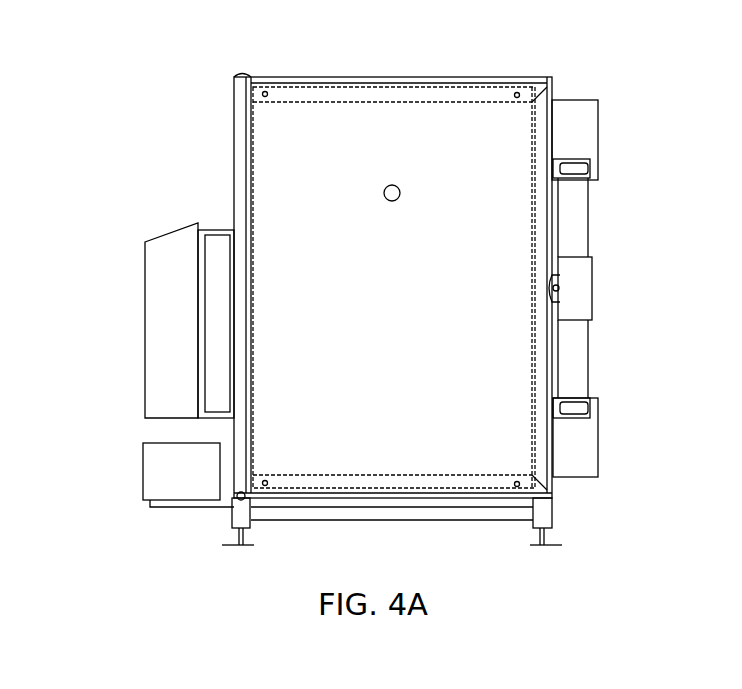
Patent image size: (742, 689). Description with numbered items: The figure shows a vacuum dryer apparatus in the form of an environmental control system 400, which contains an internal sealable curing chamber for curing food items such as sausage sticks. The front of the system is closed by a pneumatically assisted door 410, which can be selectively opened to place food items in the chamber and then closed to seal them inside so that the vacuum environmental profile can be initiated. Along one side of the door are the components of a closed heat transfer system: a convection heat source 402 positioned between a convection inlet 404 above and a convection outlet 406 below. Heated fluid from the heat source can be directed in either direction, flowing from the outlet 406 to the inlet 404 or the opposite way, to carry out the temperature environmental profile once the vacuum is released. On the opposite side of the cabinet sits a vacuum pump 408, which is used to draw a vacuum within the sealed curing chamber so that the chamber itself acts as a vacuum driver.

The environmental control system 400 is at (212, 123).
The pneumatically assisted door 410 is at (427, 118).
The convection inlet 404 is at (610, 140).
The convection heat source 402 is at (602, 282).
The convection outlet 406 is at (608, 436).
The vacuum pump 408 is at (137, 327).